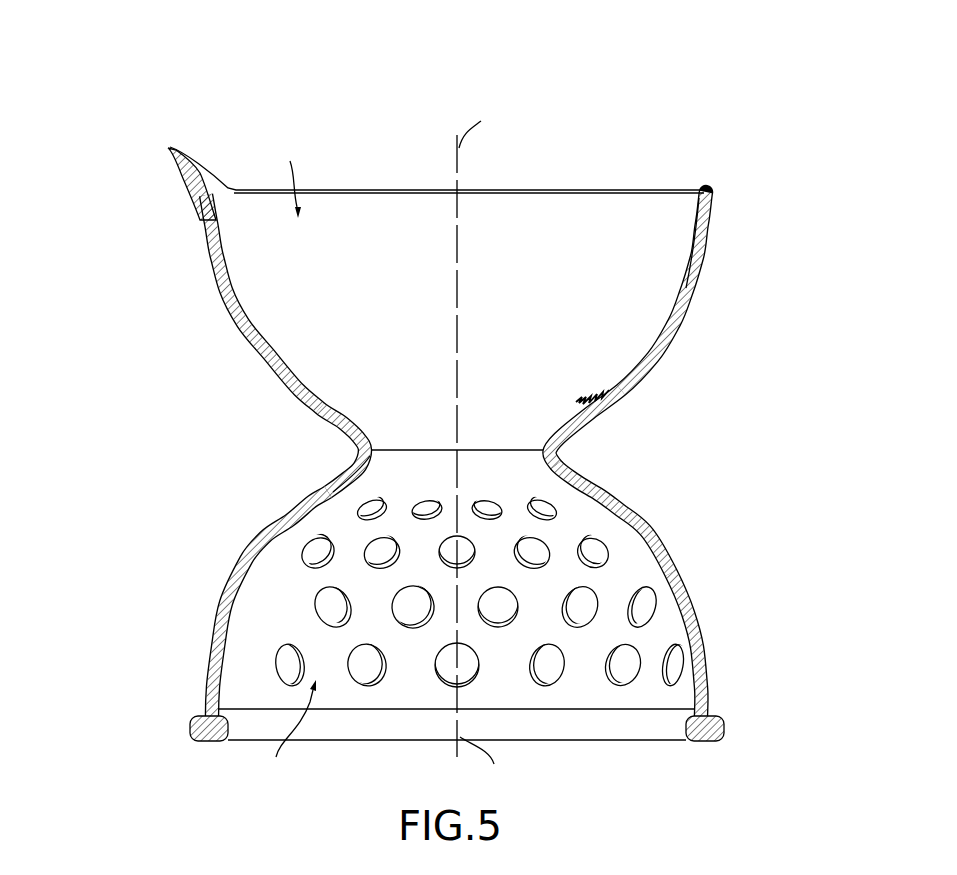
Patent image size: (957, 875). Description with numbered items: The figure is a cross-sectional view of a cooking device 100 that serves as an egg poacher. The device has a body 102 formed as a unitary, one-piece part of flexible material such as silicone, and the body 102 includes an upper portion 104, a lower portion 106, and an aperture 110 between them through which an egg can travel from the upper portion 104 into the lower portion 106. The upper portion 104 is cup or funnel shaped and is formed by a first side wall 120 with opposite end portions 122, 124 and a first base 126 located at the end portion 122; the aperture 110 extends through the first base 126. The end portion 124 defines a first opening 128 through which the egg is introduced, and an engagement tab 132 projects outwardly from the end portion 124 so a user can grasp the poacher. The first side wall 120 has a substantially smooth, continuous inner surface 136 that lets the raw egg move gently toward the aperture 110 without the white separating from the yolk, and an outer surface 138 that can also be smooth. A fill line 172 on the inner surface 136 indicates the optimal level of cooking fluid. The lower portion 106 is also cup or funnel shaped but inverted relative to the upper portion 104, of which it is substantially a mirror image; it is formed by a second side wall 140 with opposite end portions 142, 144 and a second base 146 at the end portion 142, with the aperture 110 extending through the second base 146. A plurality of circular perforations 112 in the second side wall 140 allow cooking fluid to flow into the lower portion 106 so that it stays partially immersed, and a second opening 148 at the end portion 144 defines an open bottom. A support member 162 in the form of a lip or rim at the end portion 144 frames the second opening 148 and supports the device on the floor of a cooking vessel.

The cooking device 100 is at (113, 100).
The body 102 is at (214, 453).
The upper portion 104 is at (740, 222).
The lower portion 106 is at (731, 579).
The aperture 110 is at (507, 426).
The perforation 112 is at (441, 685).
The first side wall 120 is at (209, 258).
The end portion 122 is at (566, 416).
The end portion 124 is at (694, 217).
The first base 126 is at (348, 416).
The first opening 128 is at (548, 200).
The engagement tab 132 is at (167, 149).
The inner surface 136 is at (404, 200).
The outer surface 138 is at (680, 338).
The second side wall 140 is at (218, 598).
The end portion 142 is at (598, 474).
The end portion 144 is at (711, 688).
The second base 146 is at (364, 474).
The second opening 148 is at (586, 693).
The support member 162 is at (724, 725).
The fill line 172 is at (581, 388).